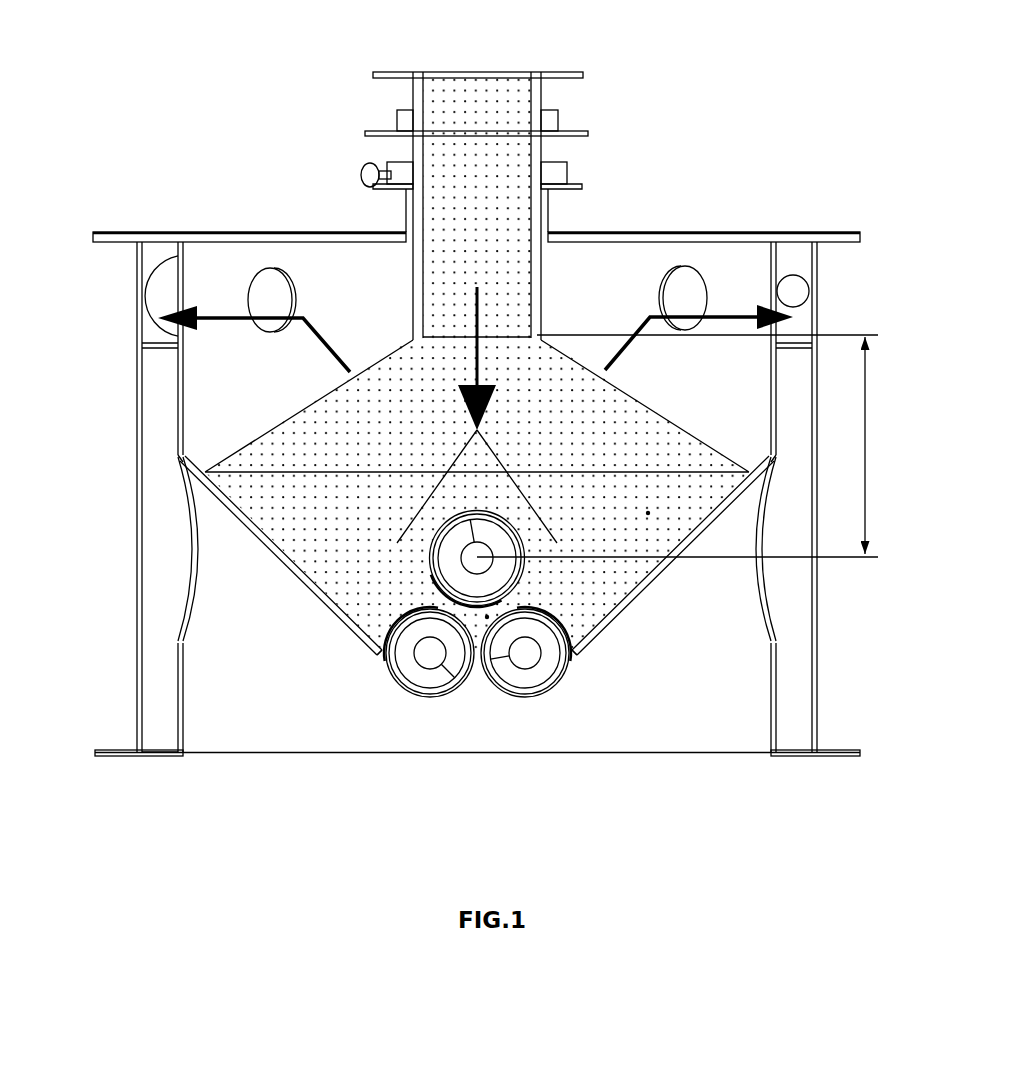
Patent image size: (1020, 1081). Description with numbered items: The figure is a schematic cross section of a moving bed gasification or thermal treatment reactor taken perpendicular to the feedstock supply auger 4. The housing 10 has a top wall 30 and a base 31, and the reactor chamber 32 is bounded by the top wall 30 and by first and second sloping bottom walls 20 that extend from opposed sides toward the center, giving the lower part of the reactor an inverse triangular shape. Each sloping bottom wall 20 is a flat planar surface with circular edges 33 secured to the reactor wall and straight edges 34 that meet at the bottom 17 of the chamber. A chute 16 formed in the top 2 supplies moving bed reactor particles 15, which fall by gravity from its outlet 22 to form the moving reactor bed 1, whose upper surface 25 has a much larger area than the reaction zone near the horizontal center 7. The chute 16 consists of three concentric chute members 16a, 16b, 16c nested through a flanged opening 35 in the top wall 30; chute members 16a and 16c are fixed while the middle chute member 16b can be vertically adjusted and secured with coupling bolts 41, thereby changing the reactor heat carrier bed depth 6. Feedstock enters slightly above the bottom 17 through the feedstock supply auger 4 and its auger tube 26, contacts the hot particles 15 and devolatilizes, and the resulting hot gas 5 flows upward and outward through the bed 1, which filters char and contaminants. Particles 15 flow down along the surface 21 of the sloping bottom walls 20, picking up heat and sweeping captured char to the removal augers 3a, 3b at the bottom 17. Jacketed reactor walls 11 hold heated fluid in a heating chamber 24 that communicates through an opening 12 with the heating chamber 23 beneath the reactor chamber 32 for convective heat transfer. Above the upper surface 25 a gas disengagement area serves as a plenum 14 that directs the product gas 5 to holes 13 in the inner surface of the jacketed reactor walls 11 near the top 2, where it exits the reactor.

The moving reactor bed 1 is at (373, 582).
The top 2 is at (330, 227).
The removal auger 3a is at (430, 655).
The removal auger 3b is at (525, 655).
The feedstock supply auger 4 is at (475, 580).
The hot gas 5 is at (228, 312).
The reactor heat carrier bed depth 6 is at (677, 446).
The horizontal center 7 is at (487, 619).
The housing 10 is at (842, 229).
The jacketed reactor walls 11 is at (175, 410).
The opening 12 is at (188, 573).
The holes 13 is at (172, 270).
The plenum 14 is at (200, 283).
The moving bed reactor particles 15 is at (478, 287).
The chute 16 is at (532, 268).
The chute member 16a is at (583, 68).
The middle chute member 16b is at (590, 128).
The chute member 16c is at (583, 183).
The bottom 17 is at (562, 690).
The sloping bottom walls 20 is at (297, 580).
The surface 21 is at (318, 593).
The outlet 22 is at (503, 337).
The heating chamber 23 is at (720, 680).
The heating chamber 24 is at (163, 610).
The upper surface 25 is at (652, 404).
The auger tube 26 is at (515, 590).
The top wall 30 is at (737, 229).
The base 31 is at (117, 757).
The reactor chamber 32 is at (650, 514).
The circular edges 33 is at (183, 458).
The straight edges 34 is at (378, 653).
The flanged opening 35 is at (402, 225).
The coupling bolt 41 is at (362, 160).